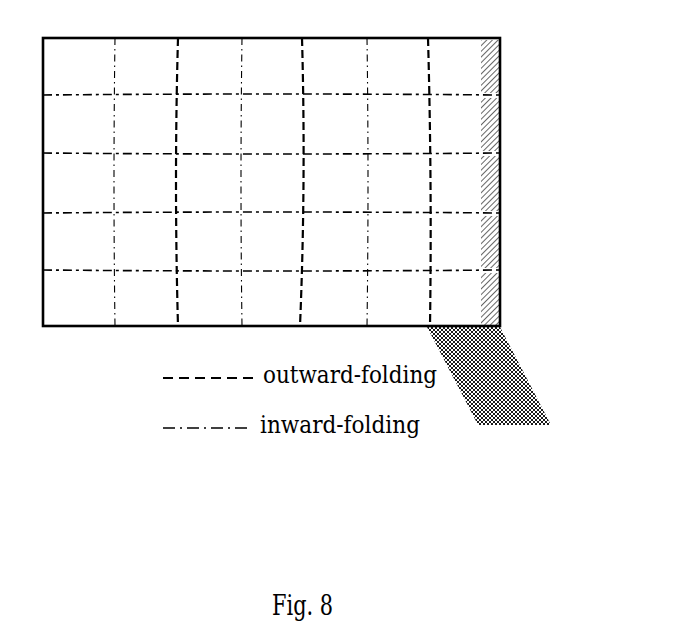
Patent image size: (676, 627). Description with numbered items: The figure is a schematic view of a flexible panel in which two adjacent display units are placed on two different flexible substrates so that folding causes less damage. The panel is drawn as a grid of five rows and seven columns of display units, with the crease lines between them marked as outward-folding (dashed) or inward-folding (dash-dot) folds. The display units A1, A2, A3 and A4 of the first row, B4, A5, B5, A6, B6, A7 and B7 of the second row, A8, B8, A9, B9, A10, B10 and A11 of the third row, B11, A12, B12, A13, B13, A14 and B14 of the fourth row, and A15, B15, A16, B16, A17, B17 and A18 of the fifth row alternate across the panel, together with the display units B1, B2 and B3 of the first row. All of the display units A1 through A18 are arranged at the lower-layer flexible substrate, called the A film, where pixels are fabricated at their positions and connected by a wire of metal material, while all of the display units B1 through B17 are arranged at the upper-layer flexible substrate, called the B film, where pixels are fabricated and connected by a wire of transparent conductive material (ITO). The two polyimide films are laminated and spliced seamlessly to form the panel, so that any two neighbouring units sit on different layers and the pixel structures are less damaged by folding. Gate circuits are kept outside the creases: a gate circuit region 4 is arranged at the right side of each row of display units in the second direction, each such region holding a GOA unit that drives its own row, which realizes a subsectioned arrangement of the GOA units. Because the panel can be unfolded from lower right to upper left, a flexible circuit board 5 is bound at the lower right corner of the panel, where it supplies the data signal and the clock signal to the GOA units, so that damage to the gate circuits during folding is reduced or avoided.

The gate circuit region 4 is at (536, 24).
The flexible circuit board 5 is at (536, 380).
The display unit A1 is at (78, 66).
The display unit B1 is at (145, 66).
The display unit A2 is at (209, 66).
The display unit B2 is at (271, 66).
The display unit A3 is at (333, 66).
The display unit B3 is at (396, 66).
The display unit A4 is at (455, 66).
The display unit B4 is at (78, 124).
The display unit A5 is at (145, 124).
The display unit B5 is at (209, 124).
The display unit A6 is at (271, 124).
The display unit B6 is at (333, 124).
The display unit A7 is at (396, 124).
The display unit B7 is at (455, 124).
The display unit A8 is at (78, 183).
The display unit B8 is at (145, 183).
The display unit A9 is at (209, 183).
The display unit B9 is at (271, 183).
The display unit A10 is at (333, 183).
The display unit B10 is at (397, 183).
The display unit A11 is at (455, 183).
The display unit B11 is at (79, 241).
The display unit A12 is at (145, 241).
The display unit B12 is at (210, 241).
The display unit A13 is at (271, 241).
The display unit B13 is at (334, 245).
The display unit A14 is at (396, 241).
The display unit B14 is at (456, 241).
The display unit A15 is at (78, 297).
The display unit B15 is at (146, 297).
The display unit A16 is at (209, 297).
The display unit B16 is at (272, 297).
The display unit A17 is at (333, 297).
The display unit B17 is at (397, 297).
The display unit A18 is at (455, 297).